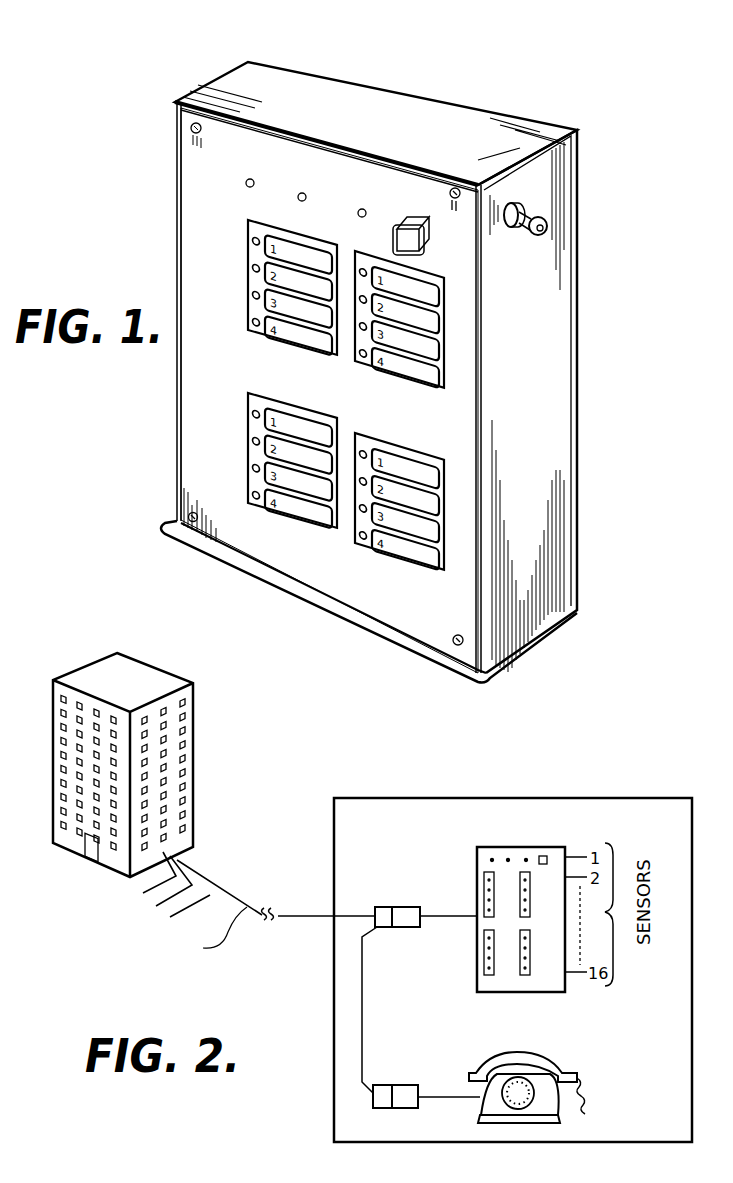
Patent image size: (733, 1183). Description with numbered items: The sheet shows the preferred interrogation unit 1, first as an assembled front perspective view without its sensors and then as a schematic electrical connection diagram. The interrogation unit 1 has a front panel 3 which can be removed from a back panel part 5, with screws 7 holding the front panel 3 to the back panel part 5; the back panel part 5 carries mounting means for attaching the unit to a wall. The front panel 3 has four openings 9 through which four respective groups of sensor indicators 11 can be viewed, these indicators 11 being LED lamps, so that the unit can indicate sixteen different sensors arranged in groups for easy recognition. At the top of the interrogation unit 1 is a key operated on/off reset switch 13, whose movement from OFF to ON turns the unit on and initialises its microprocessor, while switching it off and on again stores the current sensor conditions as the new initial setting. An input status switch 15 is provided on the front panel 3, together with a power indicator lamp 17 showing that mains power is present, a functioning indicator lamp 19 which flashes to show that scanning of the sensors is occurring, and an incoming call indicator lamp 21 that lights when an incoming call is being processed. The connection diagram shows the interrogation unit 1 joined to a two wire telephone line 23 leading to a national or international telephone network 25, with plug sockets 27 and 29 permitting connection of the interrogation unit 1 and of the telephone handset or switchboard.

In FIG. 1, the interrogation unit 1 is at (168, 193).
In FIG. 2, the interrogation unit 1 is at (483, 836).
In FIG. 1, the front panel 3 is at (320, 160).
In FIG. 1, the back panel part 5 is at (425, 118).
In FIG. 1, the screws 7 is at (197, 122).
In FIG. 1, the openings 9 is at (244, 239).
In FIG. 1, the sensor indicators 11 is at (248, 290).
In FIG. 1, the on/off reset switch 13 is at (547, 222).
In FIG. 1, the input status switch 15 is at (429, 242).
In FIG. 1, the power indicator lamp 17 is at (358, 209).
In FIG. 1, the functioning indicator lamp 19 is at (298, 195).
In FIG. 1, the incoming call indicator lamp 21 is at (246, 183).
In FIG. 2, the two wire telephone line 23 is at (240, 893).
In FIG. 2, the telephone network 25 is at (120, 652).
In FIG. 2, the plug socket 27 is at (404, 905).
In FIG. 2, the plug socket 29 is at (374, 1096).